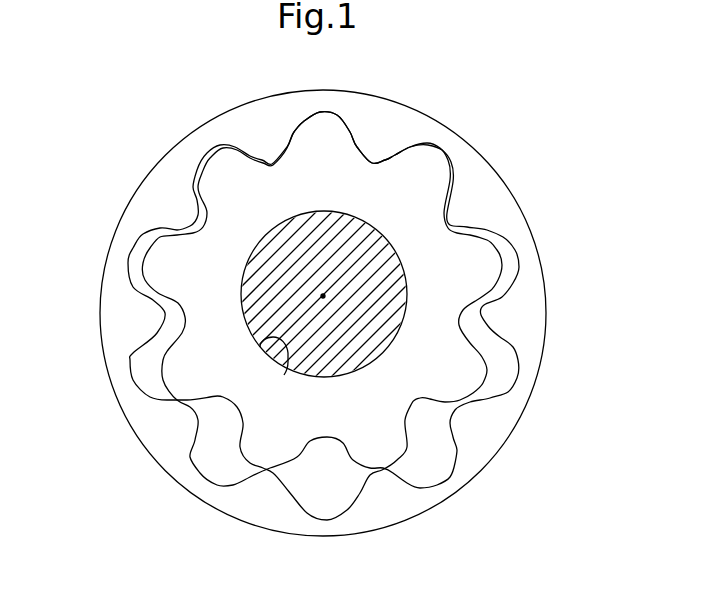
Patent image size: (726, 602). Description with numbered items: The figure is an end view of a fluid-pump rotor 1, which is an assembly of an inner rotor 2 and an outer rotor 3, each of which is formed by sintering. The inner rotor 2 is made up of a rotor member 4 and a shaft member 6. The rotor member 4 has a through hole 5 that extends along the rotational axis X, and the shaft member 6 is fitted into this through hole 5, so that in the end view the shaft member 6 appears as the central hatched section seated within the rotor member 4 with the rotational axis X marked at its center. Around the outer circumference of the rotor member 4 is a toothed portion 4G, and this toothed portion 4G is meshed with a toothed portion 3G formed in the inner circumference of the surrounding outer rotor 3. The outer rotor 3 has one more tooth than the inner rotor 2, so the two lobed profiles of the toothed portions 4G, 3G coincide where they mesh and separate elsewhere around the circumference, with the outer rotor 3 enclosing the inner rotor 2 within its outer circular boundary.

The fluid-pump rotor 1 is at (107, 186).
The inner rotor 2 is at (418, 172).
The outer rotor 3 is at (526, 410).
The toothed portion 3G is at (383, 470).
The rotor member 4 is at (231, 343).
The toothed portion 4G is at (492, 288).
The through hole 5 is at (285, 375).
The shaft member 6 is at (239, 291).
The rotational axis X is at (320, 294).